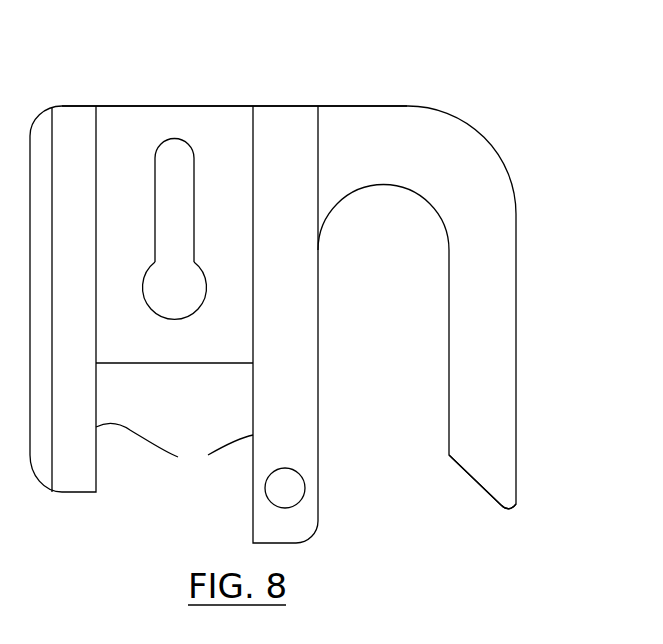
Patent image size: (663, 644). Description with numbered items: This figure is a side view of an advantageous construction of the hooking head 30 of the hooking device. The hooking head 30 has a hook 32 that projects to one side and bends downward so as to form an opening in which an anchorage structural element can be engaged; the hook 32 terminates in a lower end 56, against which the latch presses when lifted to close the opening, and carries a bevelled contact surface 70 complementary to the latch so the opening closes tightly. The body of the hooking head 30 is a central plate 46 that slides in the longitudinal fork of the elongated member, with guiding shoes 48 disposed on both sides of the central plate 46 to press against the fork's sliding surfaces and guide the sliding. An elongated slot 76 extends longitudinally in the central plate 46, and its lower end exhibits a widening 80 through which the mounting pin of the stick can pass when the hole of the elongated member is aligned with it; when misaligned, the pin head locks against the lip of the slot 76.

The hooking head 30 is at (484, 88).
The hook 32 is at (378, 120).
The central plate 46 is at (116, 118).
The guiding shoes 48 is at (174, 423).
The lower end of the hook 56 is at (522, 511).
The bevelled contact surface 70 is at (468, 477).
The elongated slot 76 is at (196, 182).
The widening 80 is at (163, 319).